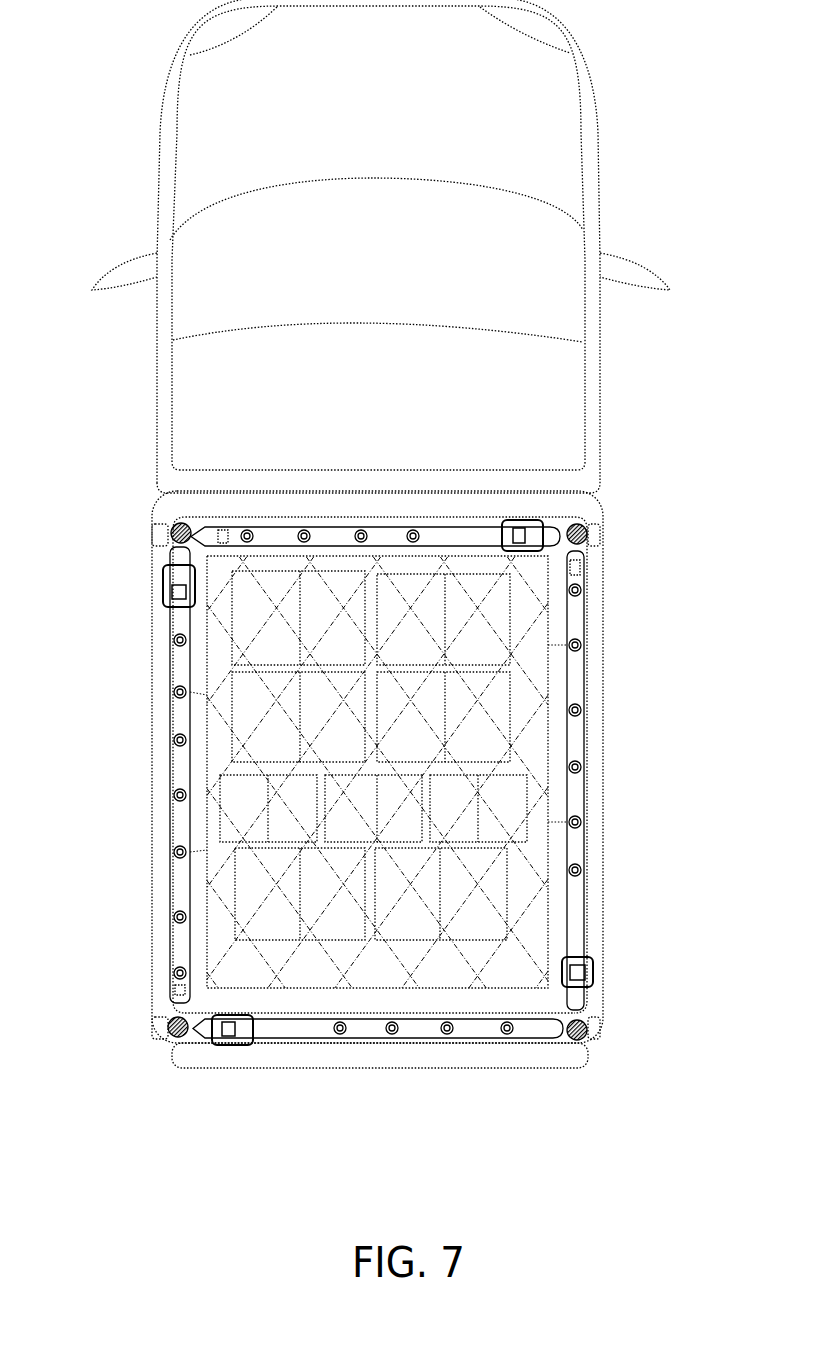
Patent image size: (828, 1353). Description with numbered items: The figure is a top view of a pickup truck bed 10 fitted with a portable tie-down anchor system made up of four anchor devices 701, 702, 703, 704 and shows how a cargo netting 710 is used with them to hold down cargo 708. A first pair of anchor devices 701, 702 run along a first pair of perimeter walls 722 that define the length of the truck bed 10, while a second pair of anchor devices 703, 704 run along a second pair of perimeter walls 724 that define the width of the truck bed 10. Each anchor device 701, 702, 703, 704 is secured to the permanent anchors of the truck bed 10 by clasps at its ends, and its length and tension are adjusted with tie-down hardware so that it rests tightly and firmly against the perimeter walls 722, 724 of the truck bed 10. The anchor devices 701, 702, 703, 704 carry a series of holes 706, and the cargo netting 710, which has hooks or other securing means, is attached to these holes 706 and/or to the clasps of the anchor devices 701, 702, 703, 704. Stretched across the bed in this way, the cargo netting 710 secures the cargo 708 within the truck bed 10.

The pickup truck bed 10 is at (325, 977).
The anchor device 701 is at (158, 755).
The anchor device 702 is at (601, 738).
The anchor device 703 is at (377, 504).
The anchor device 704 is at (306, 1054).
The holes 706 is at (580, 818).
The cargo 708 is at (257, 692).
The cargo netting 710 is at (566, 584).
The first pair of perimeter walls 722 is at (162, 847).
The second pair of perimeter walls 724 is at (475, 507).